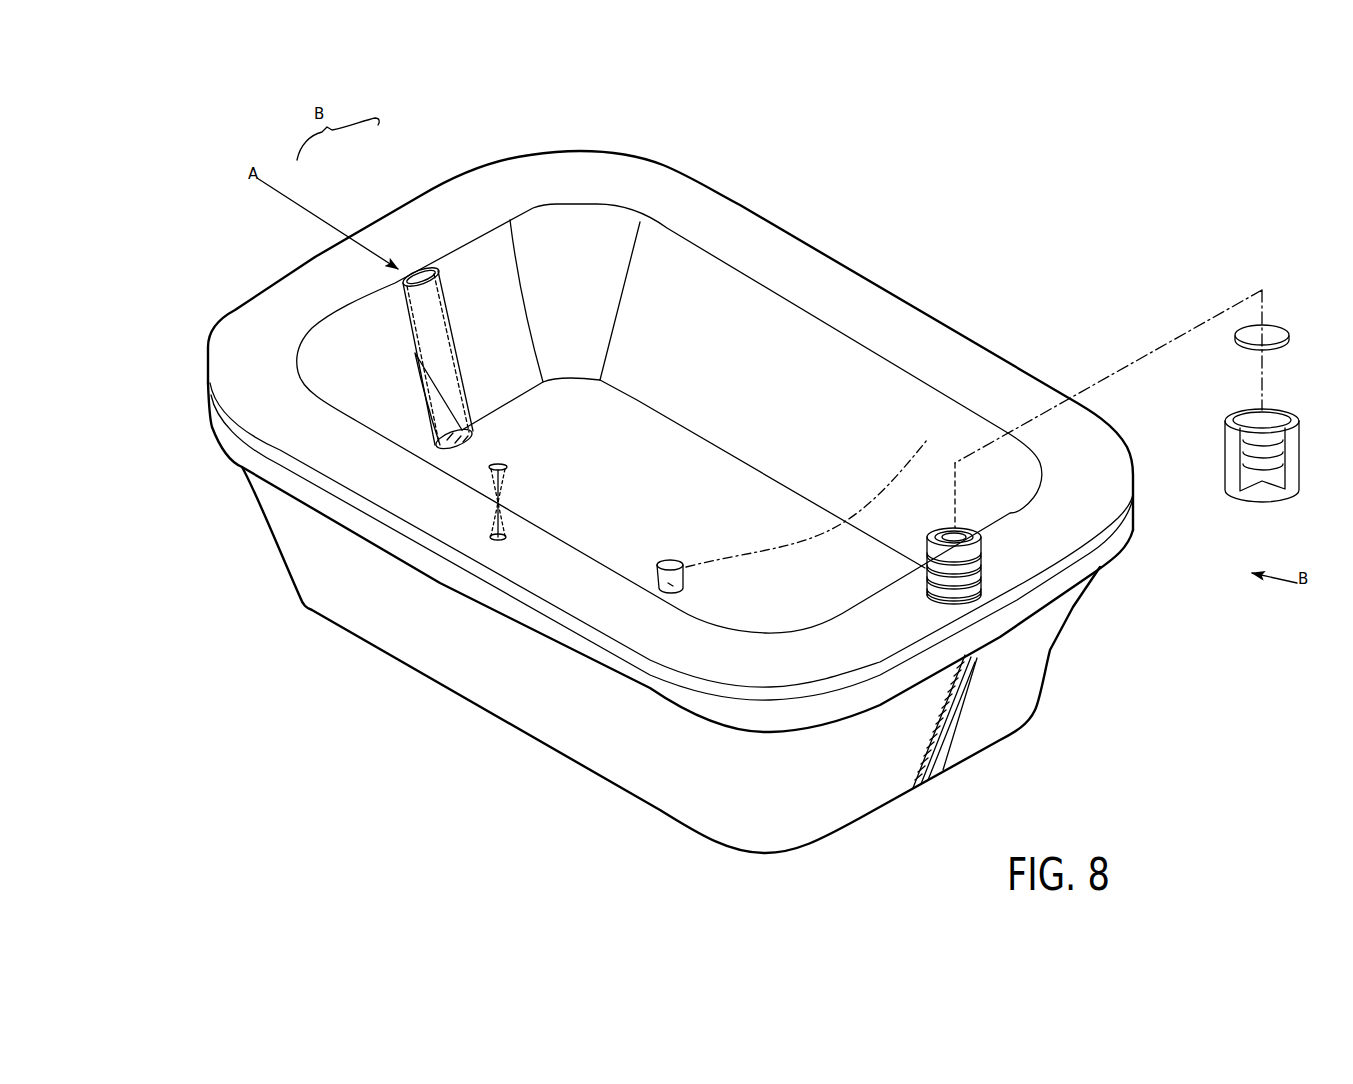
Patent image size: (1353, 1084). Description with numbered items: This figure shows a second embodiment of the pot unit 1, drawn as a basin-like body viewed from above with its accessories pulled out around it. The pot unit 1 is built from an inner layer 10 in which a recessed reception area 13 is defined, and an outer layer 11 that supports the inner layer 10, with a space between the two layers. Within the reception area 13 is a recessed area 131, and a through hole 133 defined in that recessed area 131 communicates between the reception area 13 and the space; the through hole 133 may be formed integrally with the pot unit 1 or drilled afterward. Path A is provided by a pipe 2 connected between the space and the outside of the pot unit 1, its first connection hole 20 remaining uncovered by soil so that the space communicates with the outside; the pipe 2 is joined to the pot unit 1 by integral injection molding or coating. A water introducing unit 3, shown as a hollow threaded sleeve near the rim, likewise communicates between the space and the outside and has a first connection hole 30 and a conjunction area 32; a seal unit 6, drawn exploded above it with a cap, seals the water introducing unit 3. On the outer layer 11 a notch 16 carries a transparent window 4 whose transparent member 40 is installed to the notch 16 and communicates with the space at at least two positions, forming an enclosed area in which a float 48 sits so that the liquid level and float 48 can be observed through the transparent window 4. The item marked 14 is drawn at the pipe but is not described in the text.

The pot unit 1 is at (145, 470).
The inner layer 10 is at (238, 337).
The outer layer 11 is at (272, 517).
The reception area 13 is at (577, 398).
The recessed area 131 is at (668, 556).
The through hole 133 is at (927, 440).
The through hole 14 is at (415, 353).
The pipe 2 is at (438, 270).
The first connection hole 20 is at (417, 275).
The water introducing unit 3 is at (1188, 505).
The first connection hole 30 is at (968, 530).
The conjunction area 32 is at (982, 540).
The seal unit 6 is at (1232, 453).
The transparent window 4 is at (983, 664).
The notch 16 is at (965, 673).
The transparent member 40 is at (963, 687).
The float 48 is at (958, 703).